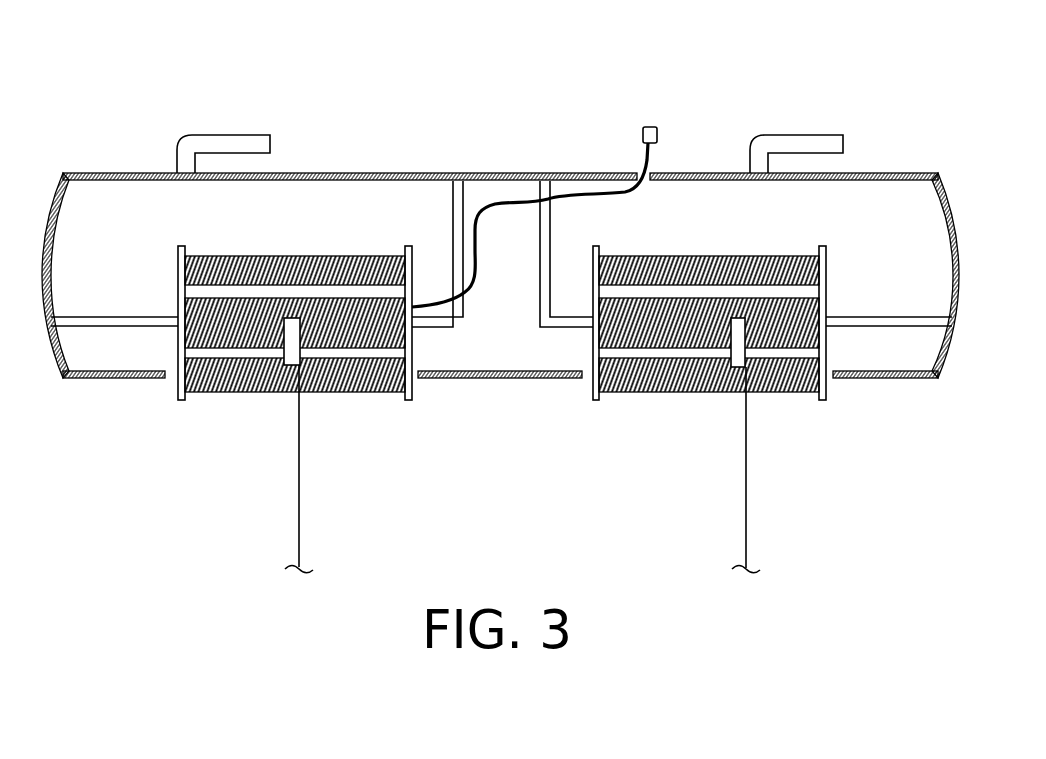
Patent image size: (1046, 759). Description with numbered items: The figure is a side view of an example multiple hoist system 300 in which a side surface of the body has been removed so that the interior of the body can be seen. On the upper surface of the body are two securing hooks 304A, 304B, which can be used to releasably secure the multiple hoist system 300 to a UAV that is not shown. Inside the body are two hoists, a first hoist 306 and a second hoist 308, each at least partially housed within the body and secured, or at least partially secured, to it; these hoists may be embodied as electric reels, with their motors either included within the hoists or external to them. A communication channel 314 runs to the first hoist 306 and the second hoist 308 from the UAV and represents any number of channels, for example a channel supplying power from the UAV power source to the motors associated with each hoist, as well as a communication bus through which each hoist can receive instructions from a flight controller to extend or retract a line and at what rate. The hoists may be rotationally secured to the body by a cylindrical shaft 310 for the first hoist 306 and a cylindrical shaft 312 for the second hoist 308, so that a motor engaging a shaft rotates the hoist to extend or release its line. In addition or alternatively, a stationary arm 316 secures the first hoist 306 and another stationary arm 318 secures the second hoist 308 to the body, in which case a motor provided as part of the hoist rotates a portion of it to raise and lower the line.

The multiple hoist system 300 is at (150, 66).
The securing hook 304A is at (232, 135).
The securing hook 304B is at (803, 135).
The first hoist 306 is at (177, 392).
The second hoist 308 is at (593, 392).
The cylindrical shaft 310 is at (108, 322).
The cylindrical shaft 312 is at (878, 322).
The communication channel 314 is at (587, 192).
The stationary arm 316 is at (455, 218).
The stationary arm 318 is at (548, 233).